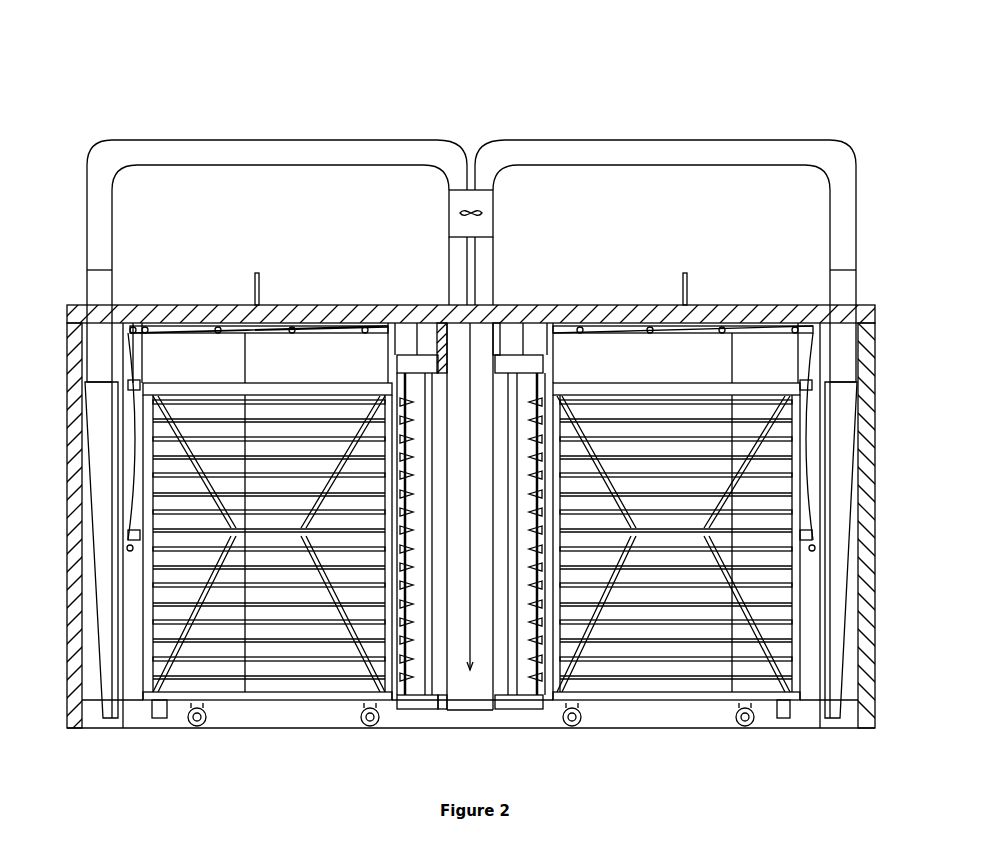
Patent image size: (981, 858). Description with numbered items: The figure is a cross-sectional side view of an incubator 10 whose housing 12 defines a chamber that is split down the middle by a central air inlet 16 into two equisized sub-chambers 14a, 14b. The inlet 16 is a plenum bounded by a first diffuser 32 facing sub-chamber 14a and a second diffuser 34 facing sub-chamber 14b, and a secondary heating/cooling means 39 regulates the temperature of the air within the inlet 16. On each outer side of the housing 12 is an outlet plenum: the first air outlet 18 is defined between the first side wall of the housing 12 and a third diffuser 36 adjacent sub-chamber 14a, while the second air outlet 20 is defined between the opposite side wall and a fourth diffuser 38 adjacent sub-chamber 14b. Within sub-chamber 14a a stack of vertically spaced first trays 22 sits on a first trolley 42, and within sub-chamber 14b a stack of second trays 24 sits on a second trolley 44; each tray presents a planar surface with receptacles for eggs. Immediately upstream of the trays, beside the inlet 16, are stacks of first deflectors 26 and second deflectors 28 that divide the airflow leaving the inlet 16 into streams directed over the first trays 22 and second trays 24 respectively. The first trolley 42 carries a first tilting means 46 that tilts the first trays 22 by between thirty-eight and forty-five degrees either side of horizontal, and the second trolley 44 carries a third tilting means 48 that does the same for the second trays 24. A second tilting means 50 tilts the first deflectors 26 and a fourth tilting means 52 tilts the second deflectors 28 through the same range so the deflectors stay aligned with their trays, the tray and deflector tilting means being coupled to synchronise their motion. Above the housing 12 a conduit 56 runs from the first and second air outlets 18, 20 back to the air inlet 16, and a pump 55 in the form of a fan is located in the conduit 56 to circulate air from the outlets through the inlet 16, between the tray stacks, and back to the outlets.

The incubator 10 is at (648, 95).
The housing 12 is at (190, 313).
The sub-chamber 14a is at (762, 352).
The sub-chamber 14b is at (325, 352).
The air inlet 16 is at (462, 702).
The first air outlet 18 is at (842, 397).
The second air outlet 20 is at (100, 400).
The first trays 22 is at (664, 672).
The second trays 24 is at (256, 655).
The first deflectors 26 is at (538, 398).
The second deflectors 28 is at (393, 382).
The first diffuser 32 is at (508, 372).
The second diffuser 34 is at (449, 400).
The third diffuser 36 is at (838, 662).
The fourth diffuser 38 is at (105, 667).
The secondary heating/cooling means 39 is at (462, 652).
The first trolley 42 is at (625, 700).
The second trolley 44 is at (348, 700).
The first tilting means 46 is at (746, 440).
The third tilting means 48 is at (350, 396).
The second tilting means 50 is at (511, 390).
The fourth tilting means 52 is at (405, 388).
The pump 55 is at (494, 205).
The conduit 56 is at (746, 140).